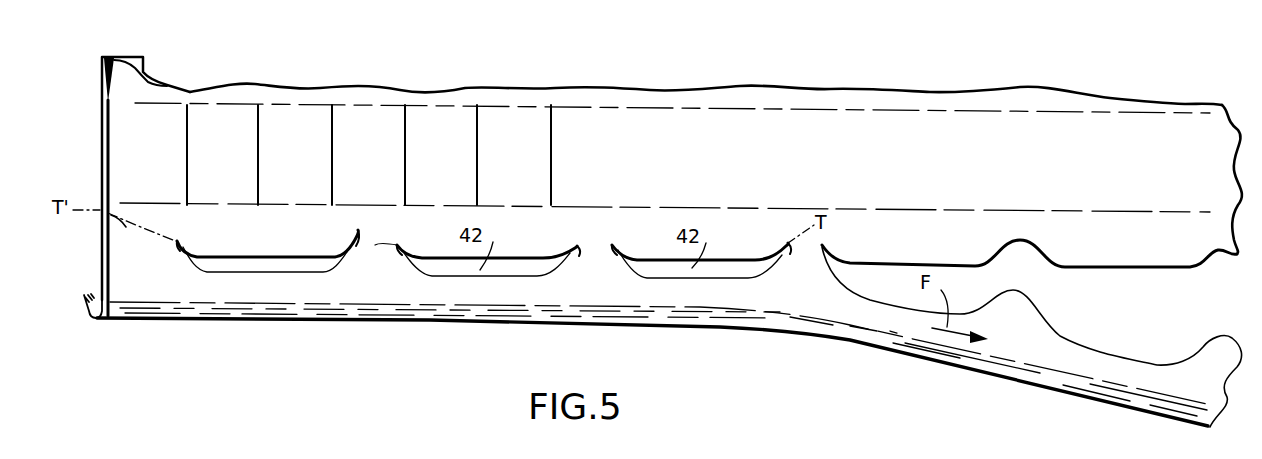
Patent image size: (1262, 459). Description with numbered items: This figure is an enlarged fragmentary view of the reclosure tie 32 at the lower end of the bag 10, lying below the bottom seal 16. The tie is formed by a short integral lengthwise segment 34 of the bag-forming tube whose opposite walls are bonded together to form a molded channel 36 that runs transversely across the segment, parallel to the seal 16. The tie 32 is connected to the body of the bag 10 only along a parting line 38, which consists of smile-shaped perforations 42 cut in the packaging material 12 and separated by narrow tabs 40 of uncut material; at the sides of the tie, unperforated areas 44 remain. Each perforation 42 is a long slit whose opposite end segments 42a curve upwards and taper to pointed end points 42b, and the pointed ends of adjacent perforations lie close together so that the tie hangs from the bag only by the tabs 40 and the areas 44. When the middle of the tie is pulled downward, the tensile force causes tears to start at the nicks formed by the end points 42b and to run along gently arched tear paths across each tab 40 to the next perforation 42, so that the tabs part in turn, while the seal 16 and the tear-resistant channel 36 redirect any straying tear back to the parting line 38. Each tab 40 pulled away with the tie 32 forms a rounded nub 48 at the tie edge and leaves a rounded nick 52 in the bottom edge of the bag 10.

The bag 10 is at (84, 170).
The packaging material 12 is at (100, 76).
The seal 16 is at (187, 158).
The reclosure tie 32 is at (80, 328).
The lengthwise segment 34 is at (83, 296).
The molded channel 36 is at (102, 320).
The parting line 38 is at (171, 223).
The tabs 40 is at (375, 245).
The perforations 42 is at (250, 262).
The end segments 42a is at (200, 249).
The end points 42b is at (363, 232).
The unperforated areas 44 is at (130, 265).
The rounded nub 48 is at (1022, 312).
The nick 52 is at (1004, 250).